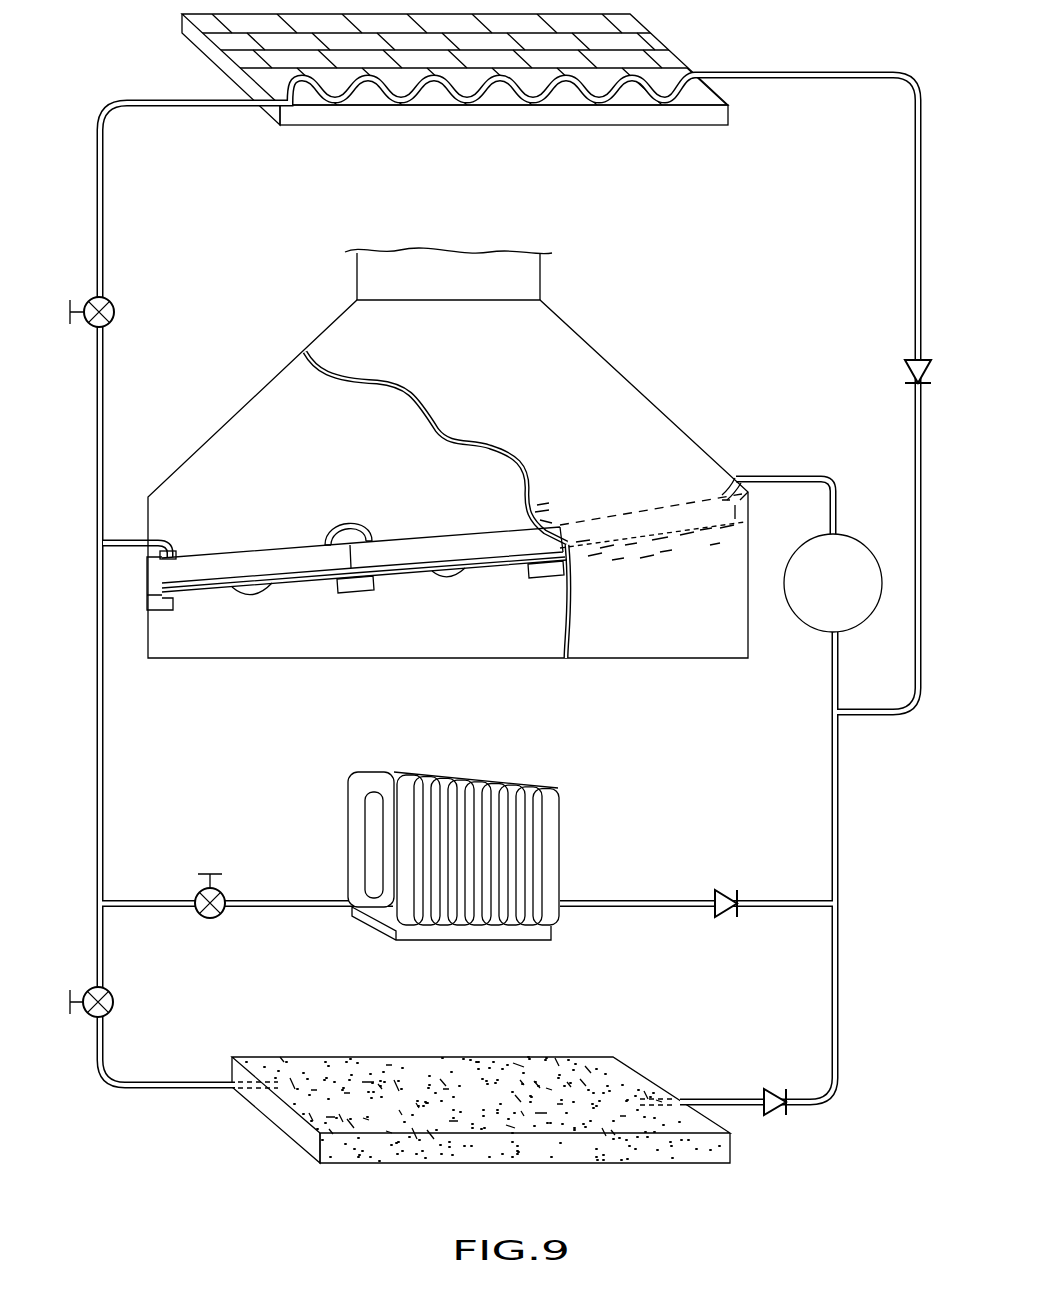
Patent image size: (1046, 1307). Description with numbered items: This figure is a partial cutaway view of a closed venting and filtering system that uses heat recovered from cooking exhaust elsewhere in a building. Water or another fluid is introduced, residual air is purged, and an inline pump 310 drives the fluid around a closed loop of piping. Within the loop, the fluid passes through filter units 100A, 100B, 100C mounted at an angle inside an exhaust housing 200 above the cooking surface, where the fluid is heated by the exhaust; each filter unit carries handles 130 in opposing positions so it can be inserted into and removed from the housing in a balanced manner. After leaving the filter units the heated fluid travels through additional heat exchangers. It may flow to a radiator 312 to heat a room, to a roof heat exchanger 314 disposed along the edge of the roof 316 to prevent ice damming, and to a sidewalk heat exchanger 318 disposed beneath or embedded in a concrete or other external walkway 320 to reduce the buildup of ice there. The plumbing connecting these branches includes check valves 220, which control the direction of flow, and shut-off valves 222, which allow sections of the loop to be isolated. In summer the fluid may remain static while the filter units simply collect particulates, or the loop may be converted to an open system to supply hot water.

The roof heat exchanger 314 is at (205, 23).
The roof 316 is at (606, 98).
The shut-off valve 222 is at (115, 312).
The check valve 220 is at (907, 370).
The exhaust housing 200 is at (562, 427).
The filter unit 100A is at (652, 517).
The filter unit 100B is at (442, 537).
The filter unit 100C is at (250, 563).
The handle 130 is at (263, 590).
The inline pump 310 is at (857, 540).
The radiator 312 is at (560, 865).
The sidewalk heat exchanger 318 is at (560, 1063).
The external walkway 320 is at (307, 1057).